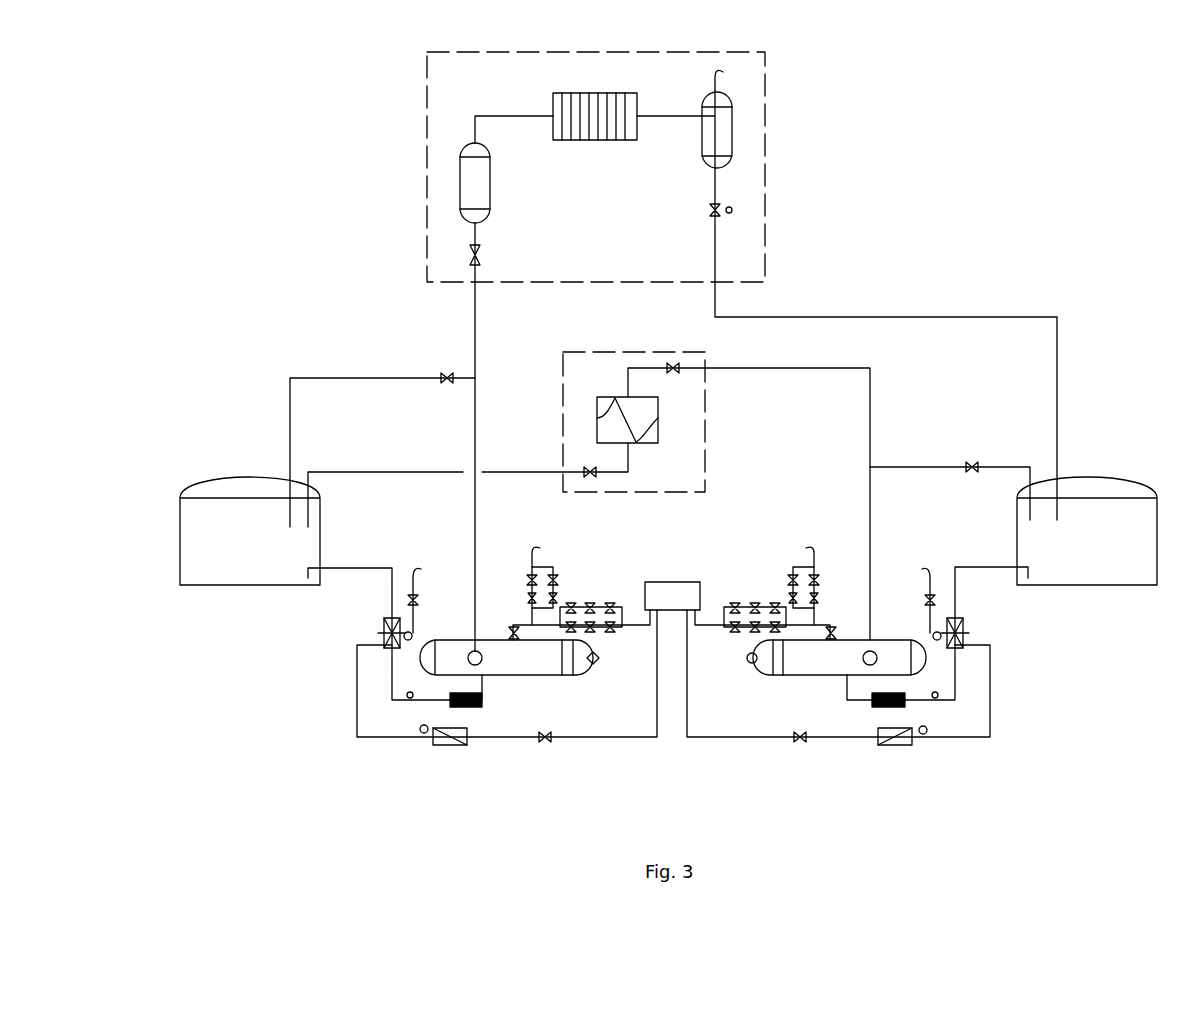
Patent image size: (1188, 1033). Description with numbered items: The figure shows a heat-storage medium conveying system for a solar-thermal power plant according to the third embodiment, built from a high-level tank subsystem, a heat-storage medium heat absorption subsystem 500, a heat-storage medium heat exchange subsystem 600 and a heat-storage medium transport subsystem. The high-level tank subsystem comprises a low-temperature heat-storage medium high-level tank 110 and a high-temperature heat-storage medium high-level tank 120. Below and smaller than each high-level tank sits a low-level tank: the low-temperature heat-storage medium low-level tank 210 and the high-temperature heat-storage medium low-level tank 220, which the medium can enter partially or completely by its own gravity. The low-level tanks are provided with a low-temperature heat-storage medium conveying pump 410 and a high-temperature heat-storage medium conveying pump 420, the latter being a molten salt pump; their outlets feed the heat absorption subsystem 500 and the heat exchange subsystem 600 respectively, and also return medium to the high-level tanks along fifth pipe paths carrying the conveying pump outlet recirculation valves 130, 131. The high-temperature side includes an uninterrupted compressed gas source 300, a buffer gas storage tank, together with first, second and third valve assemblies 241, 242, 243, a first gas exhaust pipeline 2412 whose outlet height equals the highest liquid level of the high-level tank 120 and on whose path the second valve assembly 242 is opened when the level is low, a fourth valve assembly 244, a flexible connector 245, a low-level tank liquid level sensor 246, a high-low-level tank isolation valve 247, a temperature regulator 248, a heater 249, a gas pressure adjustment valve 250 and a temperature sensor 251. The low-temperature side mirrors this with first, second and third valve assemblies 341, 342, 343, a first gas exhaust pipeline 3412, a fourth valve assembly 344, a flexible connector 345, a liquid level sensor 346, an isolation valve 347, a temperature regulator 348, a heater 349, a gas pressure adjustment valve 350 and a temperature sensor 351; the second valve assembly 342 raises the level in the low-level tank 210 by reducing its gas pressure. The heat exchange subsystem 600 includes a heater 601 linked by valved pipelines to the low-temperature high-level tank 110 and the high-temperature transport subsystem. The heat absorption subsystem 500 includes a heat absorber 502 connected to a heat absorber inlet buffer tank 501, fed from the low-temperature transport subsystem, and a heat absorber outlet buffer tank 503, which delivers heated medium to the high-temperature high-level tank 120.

The low-temperature heat-storage medium high-level tank 110 is at (240, 490).
The high-temperature heat-storage medium high-level tank 120 is at (1088, 482).
The low-temperature heat-storage medium conveying pump outlet recirculation valve 130 is at (447, 376).
The high-temperature heat-storage medium conveying pump outlet recirculation valve 131 is at (975, 466).
The low-temperature heat-storage medium low-level tank 210 is at (510, 660).
The high-temperature heat-storage medium low-level tank 220 is at (797, 665).
The high-temperature heat-storage medium first valve assembly 241 is at (750, 607).
The high-temperature heat-storage medium first gas exhaust pipeline 2412 is at (812, 545).
The high-temperature heat-storage medium second valve assembly 242 is at (816, 575).
The high-temperature heat-storage medium third valve assembly 243 is at (832, 633).
The high-temperature heat-storage medium fourth valve assembly 244 is at (800, 742).
The high-temperature heat-storage medium flexible connector 245 is at (905, 700).
The high-temperature heat-storage medium low-level tank liquid level sensor 246 is at (746, 659).
The high-temperature heat-storage medium high-low-level tank isolation valve 247 is at (938, 695).
The high-temperature heat-storage medium temperature regulator 248 is at (966, 631).
The high-temperature heat-storage medium heater 249 is at (910, 745).
The high-temperature heat-storage medium gas pressure adjustment valve 250 is at (928, 598).
The high-temperature heat-storage medium temperature sensor 251 is at (938, 631).
The uninterrupted compressed gas source 300 is at (668, 582).
The low-temperature heat-storage medium first valve assembly 341 is at (605, 607).
The low-temperature heat-storage medium first gas exhaust pipeline 3412 is at (536, 545).
The low-temperature heat-storage medium second valve assembly 342 is at (522, 578).
The low-temperature heat-storage medium third valve assembly 343 is at (516, 632).
The low-temperature heat-storage medium fourth valve assembly 344 is at (545, 741).
The low-temperature heat-storage medium flexible connector 345 is at (475, 707).
The low-temperature heat-storage medium low-level tank liquid level sensor 346 is at (594, 663).
The low-temperature heat-storage medium high-low-level tank isolation valve 347 is at (407, 697).
The low-temperature heat-storage medium temperature regulator 348 is at (382, 634).
The low-temperature heat-storage medium heater 349 is at (433, 741).
The low-temperature heat-storage medium gas pressure adjustment valve 350 is at (415, 598).
The low-temperature heat-storage medium temperature sensor 351 is at (407, 631).
The low-temperature heat-storage medium conveying pump 410 is at (473, 654).
The high-temperature heat-storage medium conveying pump 420 is at (873, 654).
The heat-storage medium heat absorption subsystem 500 is at (427, 282).
The heat absorber inlet buffer tank 501 is at (463, 176).
The heat absorber 502 is at (603, 78).
The heat absorber outlet buffer tank 503 is at (734, 138).
The heat-storage medium heat exchange subsystem 600 is at (563, 352).
The heater 601 is at (603, 397).